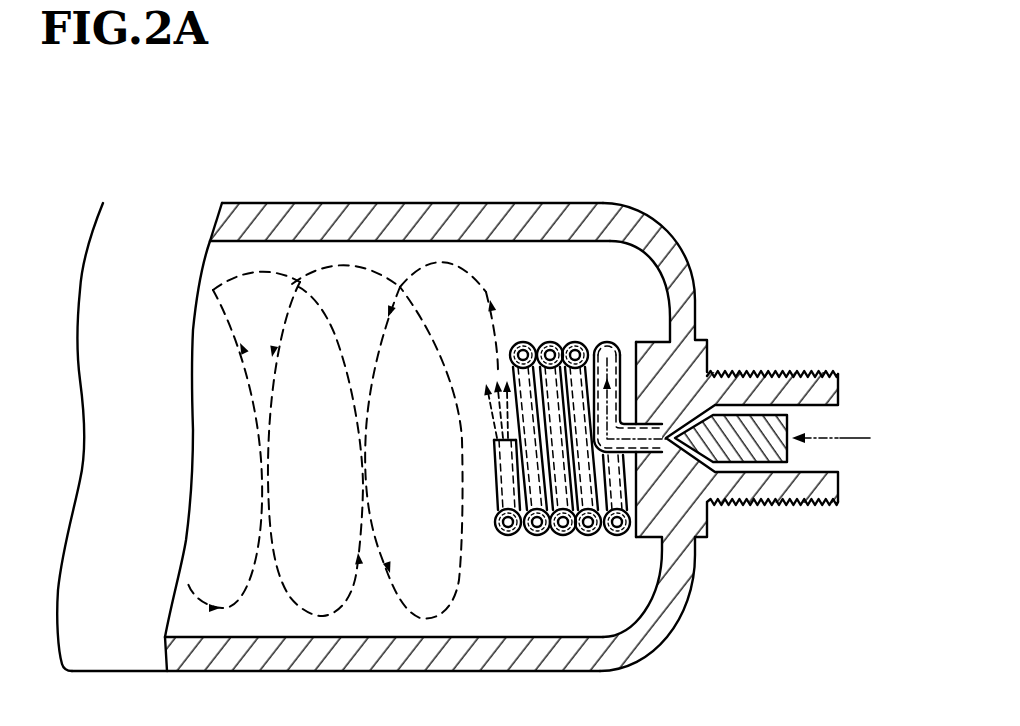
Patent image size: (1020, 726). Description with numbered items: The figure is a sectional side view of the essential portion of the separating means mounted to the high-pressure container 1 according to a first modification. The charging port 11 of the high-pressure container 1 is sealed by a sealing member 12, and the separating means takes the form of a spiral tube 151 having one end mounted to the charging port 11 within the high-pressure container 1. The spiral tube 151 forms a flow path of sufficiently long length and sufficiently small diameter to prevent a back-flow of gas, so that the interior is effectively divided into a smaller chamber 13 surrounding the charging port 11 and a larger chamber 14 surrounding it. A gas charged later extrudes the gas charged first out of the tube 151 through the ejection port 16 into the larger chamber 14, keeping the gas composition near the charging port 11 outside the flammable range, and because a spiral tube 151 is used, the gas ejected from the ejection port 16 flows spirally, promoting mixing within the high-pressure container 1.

The high-pressure container 1 is at (232, 190).
The spiral tube 151 is at (539, 305).
The charging port 11 is at (698, 350).
The sealing member 12 is at (744, 420).
The smaller chamber 13 is at (533, 458).
The larger chamber 14 is at (238, 490).
The ejection port 16 is at (500, 438).